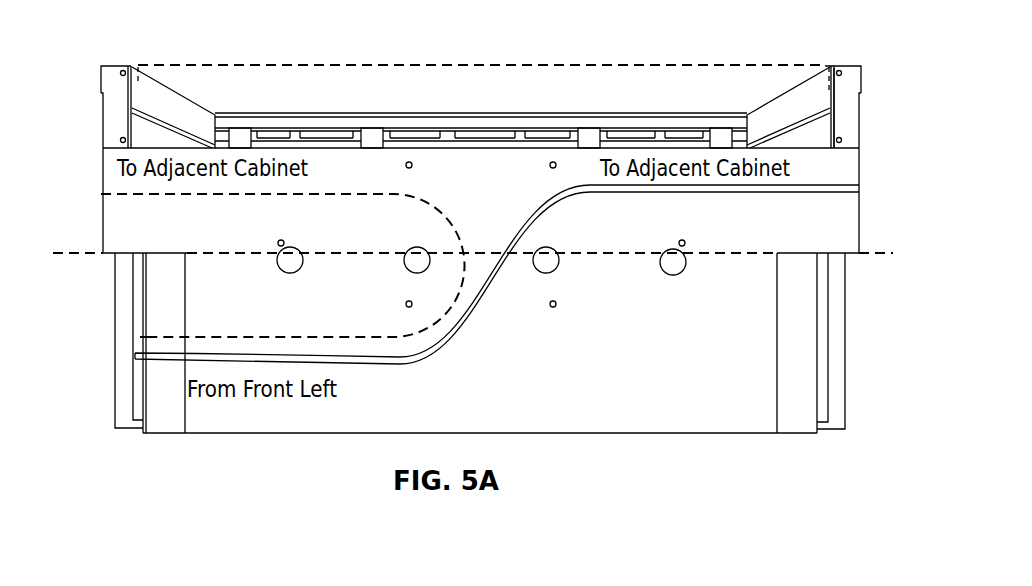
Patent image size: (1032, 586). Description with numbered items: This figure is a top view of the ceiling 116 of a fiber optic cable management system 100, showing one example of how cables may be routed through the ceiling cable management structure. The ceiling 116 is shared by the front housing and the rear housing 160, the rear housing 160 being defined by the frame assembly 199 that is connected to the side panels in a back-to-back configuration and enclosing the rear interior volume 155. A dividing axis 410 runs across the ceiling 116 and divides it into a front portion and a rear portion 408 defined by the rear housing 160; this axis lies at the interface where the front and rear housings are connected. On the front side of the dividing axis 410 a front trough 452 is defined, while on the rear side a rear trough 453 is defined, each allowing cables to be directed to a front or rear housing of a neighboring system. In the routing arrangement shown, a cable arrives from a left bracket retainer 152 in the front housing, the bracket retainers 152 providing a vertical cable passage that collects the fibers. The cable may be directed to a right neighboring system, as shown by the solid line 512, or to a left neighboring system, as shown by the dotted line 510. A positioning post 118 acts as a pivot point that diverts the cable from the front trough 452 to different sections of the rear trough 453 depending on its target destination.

The fiber optic cable management system 100 is at (392, 64).
The rear housing 160 is at (841, 75).
The frame assembly 199 is at (112, 112).
The rear interior volume 155 is at (742, 96).
The positioning post 118 is at (690, 253).
The dividing axis 410 is at (95, 252).
The rear trough 453 is at (103, 194).
The dotted line 510 is at (146, 338).
The solid line 512 is at (135, 356).
The rear portion 408 is at (827, 228).
The bracket retainer 152 is at (113, 315).
The ceiling 116 is at (737, 357).
The front trough 452 is at (728, 383).